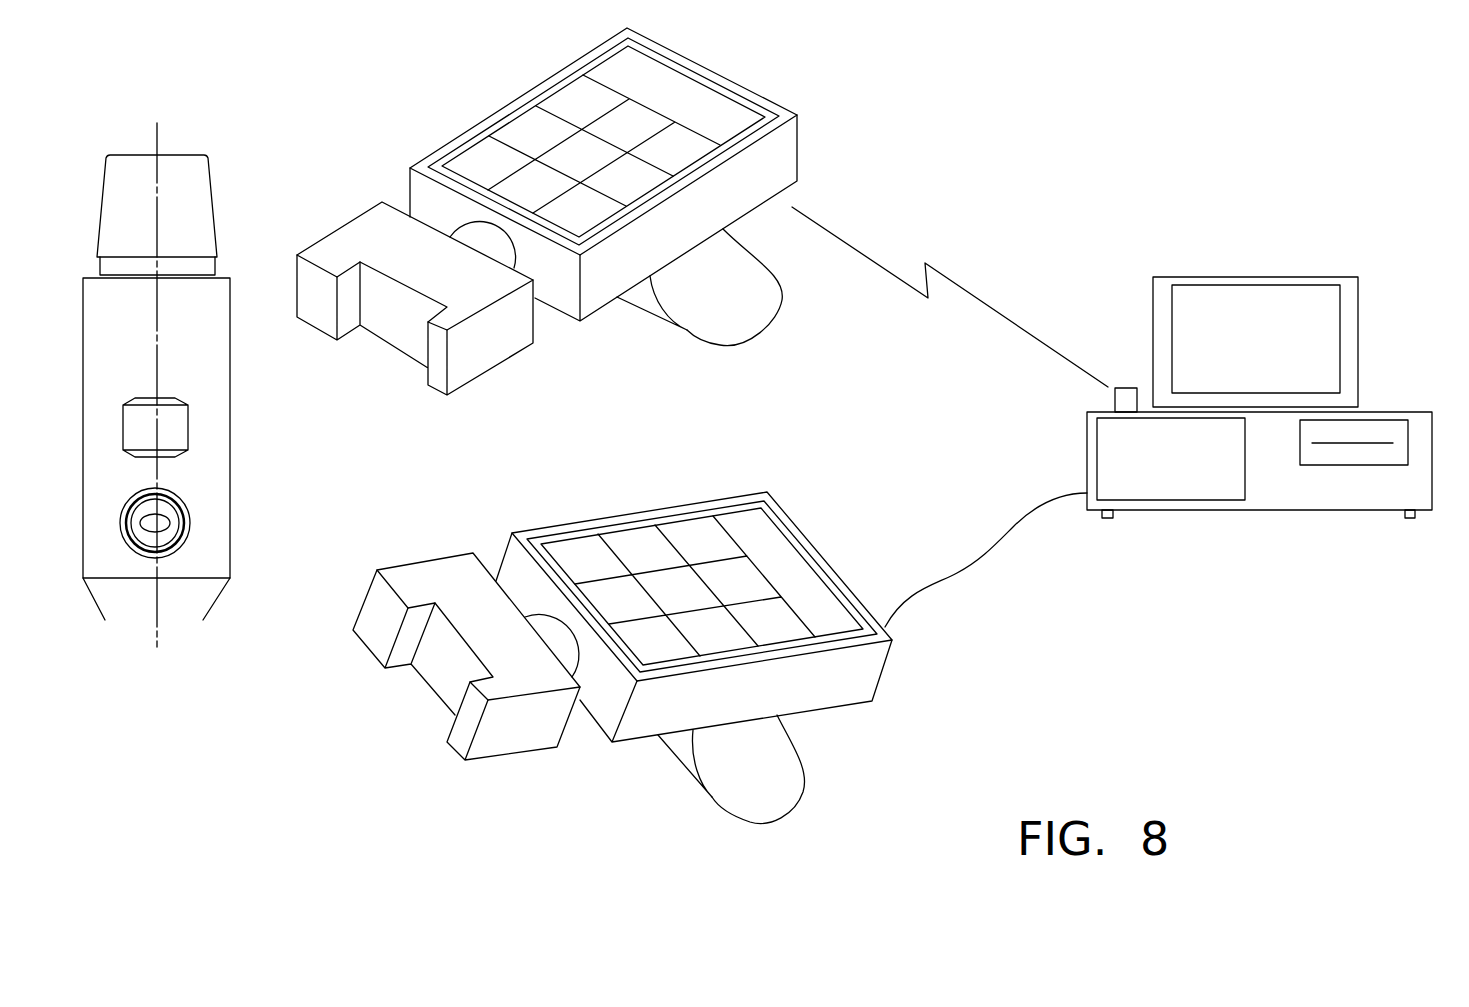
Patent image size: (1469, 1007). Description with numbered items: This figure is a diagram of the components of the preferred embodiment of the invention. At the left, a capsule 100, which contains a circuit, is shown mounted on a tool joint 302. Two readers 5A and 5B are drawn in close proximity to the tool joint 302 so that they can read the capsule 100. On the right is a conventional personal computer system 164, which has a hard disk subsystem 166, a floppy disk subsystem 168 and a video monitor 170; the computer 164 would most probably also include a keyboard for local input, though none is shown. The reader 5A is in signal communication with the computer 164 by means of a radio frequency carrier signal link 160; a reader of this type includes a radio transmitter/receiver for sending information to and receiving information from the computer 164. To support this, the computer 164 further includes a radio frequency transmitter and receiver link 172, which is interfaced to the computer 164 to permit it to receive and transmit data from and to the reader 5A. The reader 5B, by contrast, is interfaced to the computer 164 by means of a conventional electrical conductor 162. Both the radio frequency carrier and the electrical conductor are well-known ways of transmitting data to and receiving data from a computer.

The reader 5A is at (751, 87).
The reader 5B is at (706, 491).
The tool joint 302 is at (230, 435).
The capsule 100 is at (190, 518).
The radio frequency carrier signal link 160 is at (967, 285).
The electrical conductor 162 is at (958, 572).
The personal computer system 164 is at (1381, 390).
The hard disk subsystem 166 is at (1187, 487).
The floppy disk subsystem 168 is at (1368, 460).
The video monitor 170 is at (1283, 292).
The radio frequency transmitter and receiver link 172 is at (1127, 388).